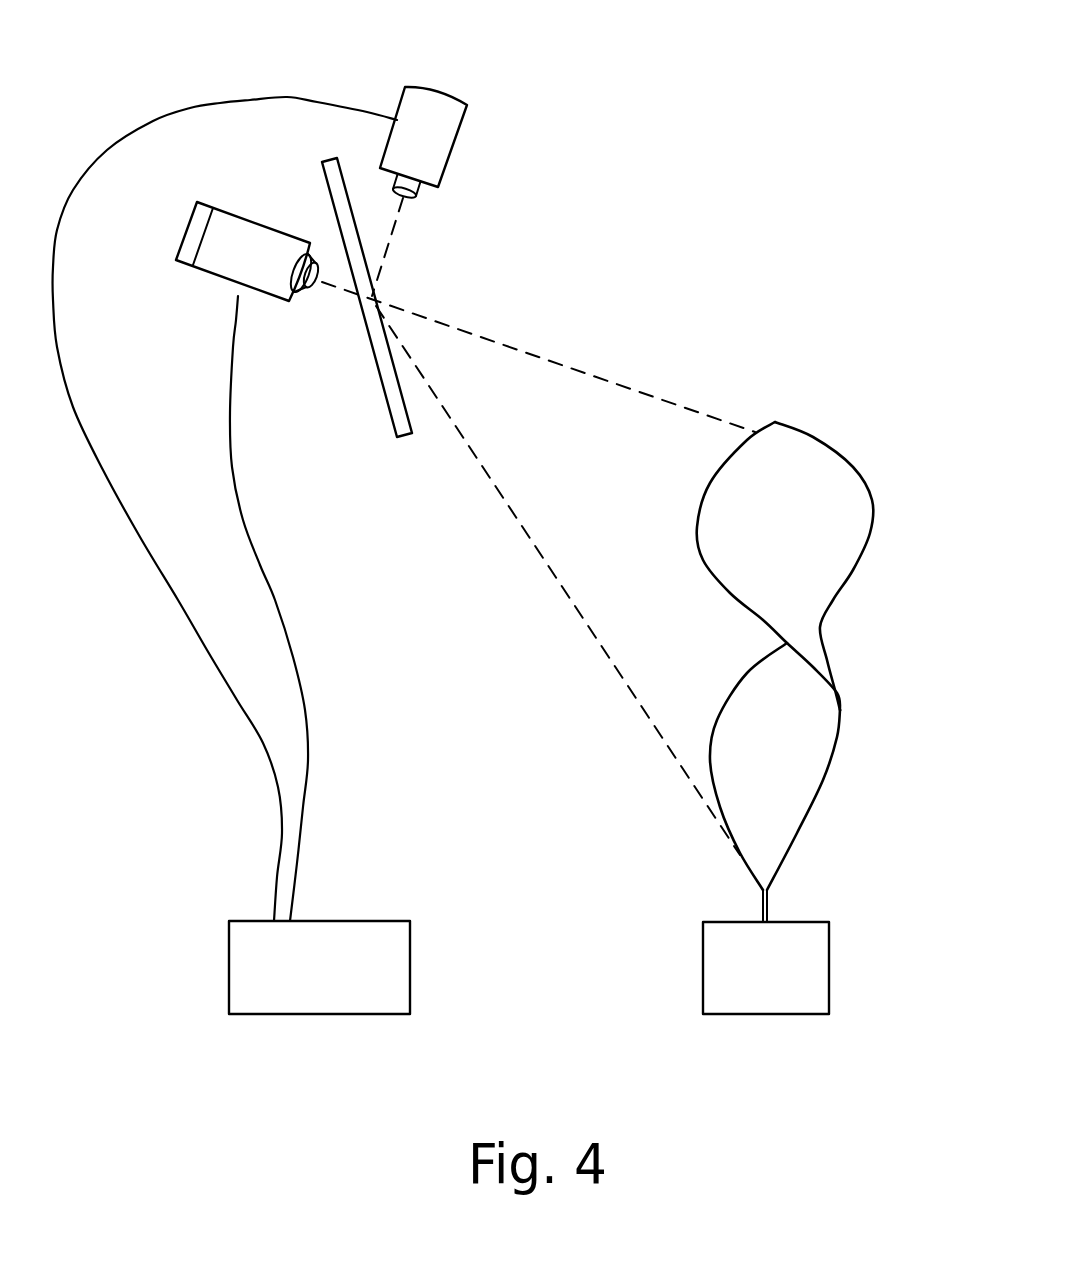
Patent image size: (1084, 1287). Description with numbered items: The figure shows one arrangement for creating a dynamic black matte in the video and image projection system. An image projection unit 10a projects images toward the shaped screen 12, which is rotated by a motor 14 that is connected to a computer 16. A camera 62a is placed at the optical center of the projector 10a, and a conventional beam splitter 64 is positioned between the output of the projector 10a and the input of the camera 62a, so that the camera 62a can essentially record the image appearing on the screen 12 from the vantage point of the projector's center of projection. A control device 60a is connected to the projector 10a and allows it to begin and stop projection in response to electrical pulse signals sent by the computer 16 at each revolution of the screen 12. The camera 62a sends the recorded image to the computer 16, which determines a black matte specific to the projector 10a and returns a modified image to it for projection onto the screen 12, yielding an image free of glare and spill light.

The camera 62a is at (443, 147).
The image projection unit 10a is at (267, 270).
The control device 60a is at (190, 268).
The beam splitter 64 is at (404, 438).
The shaped screen 12 is at (853, 535).
The motor 14 is at (780, 1007).
The computer 16 is at (333, 1007).